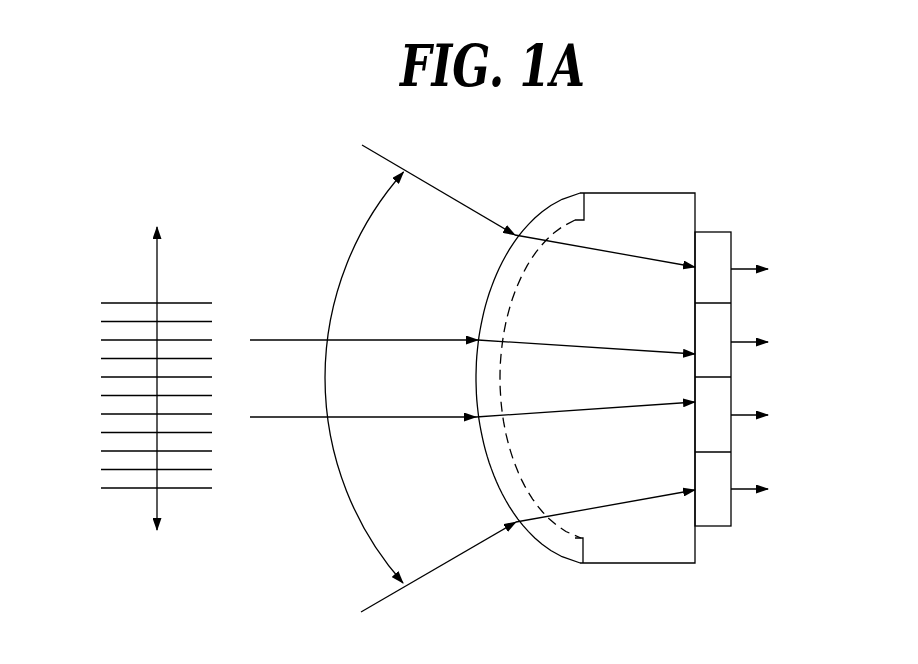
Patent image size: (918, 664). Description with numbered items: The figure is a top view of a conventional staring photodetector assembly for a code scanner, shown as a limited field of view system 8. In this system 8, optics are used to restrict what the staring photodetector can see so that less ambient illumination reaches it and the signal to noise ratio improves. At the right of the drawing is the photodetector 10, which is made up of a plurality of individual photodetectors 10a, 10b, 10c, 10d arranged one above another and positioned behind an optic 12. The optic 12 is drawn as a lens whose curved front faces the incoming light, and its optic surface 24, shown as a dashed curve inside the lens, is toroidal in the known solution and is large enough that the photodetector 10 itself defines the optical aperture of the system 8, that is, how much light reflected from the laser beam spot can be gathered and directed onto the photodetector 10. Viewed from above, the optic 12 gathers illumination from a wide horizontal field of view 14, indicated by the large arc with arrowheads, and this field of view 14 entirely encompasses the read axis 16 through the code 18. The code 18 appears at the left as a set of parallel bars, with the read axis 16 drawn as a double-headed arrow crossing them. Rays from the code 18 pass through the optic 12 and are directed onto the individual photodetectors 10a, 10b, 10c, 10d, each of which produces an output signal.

The limited field of view system 8 is at (660, 153).
The photodetector 10 is at (763, 354).
The photodetector 10a is at (731, 252).
The photodetector 10b is at (731, 322).
The photodetector 10c is at (731, 397).
The photodetector 10d is at (731, 470).
The optic 12 is at (585, 383).
The wide horizontal field of view 14 is at (350, 253).
The read axis 16 is at (155, 503).
The code 18 is at (113, 303).
The optic surface 24 is at (530, 545).